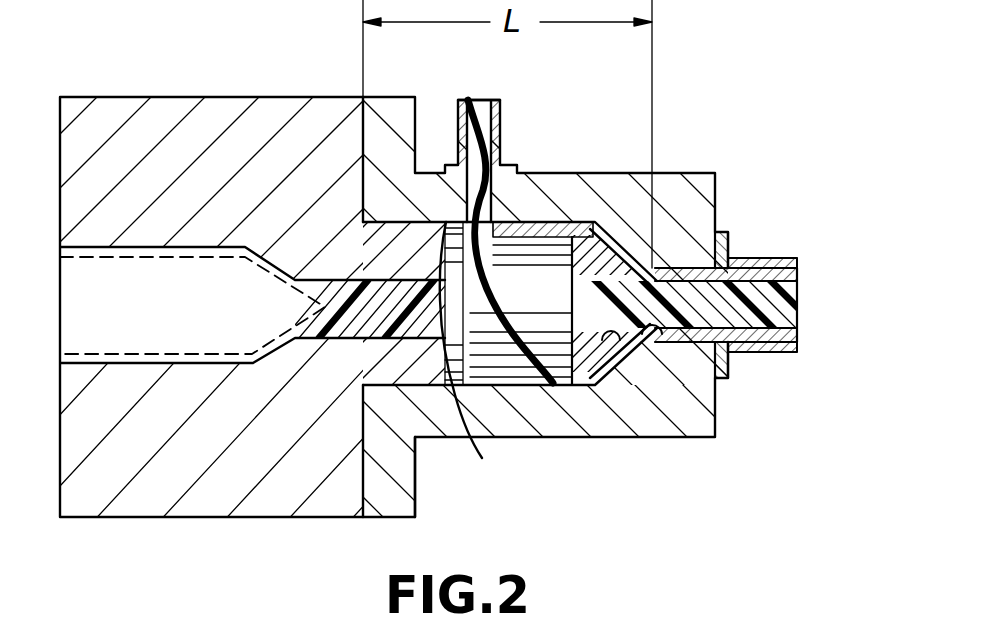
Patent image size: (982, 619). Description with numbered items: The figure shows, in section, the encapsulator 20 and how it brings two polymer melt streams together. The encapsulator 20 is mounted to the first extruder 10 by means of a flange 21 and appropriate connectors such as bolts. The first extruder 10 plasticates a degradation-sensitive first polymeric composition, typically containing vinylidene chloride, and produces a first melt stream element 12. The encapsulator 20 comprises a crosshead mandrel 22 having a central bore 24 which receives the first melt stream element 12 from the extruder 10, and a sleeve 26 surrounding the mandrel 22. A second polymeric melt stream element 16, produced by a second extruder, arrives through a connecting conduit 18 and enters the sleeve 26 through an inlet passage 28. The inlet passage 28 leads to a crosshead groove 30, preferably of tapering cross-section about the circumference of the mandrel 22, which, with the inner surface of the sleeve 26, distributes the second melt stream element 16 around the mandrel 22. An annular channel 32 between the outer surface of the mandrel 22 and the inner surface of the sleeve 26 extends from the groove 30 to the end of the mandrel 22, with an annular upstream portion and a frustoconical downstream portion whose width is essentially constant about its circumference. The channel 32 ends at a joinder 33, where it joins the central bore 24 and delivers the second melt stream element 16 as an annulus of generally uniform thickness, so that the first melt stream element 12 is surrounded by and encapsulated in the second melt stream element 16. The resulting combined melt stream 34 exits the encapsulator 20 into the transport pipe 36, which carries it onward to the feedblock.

The first extruder 10 is at (176, 93).
The first melt stream element 12 is at (313, 327).
The second polymeric melt stream element 16 is at (505, 135).
The connecting conduit 18 is at (498, 111).
The encapsulator 20 is at (596, 166).
The flange 21 is at (418, 502).
The crosshead mandrel 22 is at (560, 303).
The central bore 24 is at (613, 340).
The sleeve 26 is at (537, 440).
The inlet passage 28 is at (470, 160).
The crosshead groove 30 is at (480, 358).
The annular channel 32 is at (586, 221).
The joinder 33 is at (658, 336).
The combined melt stream 34 is at (752, 254).
The transport pipe 36 is at (781, 352).